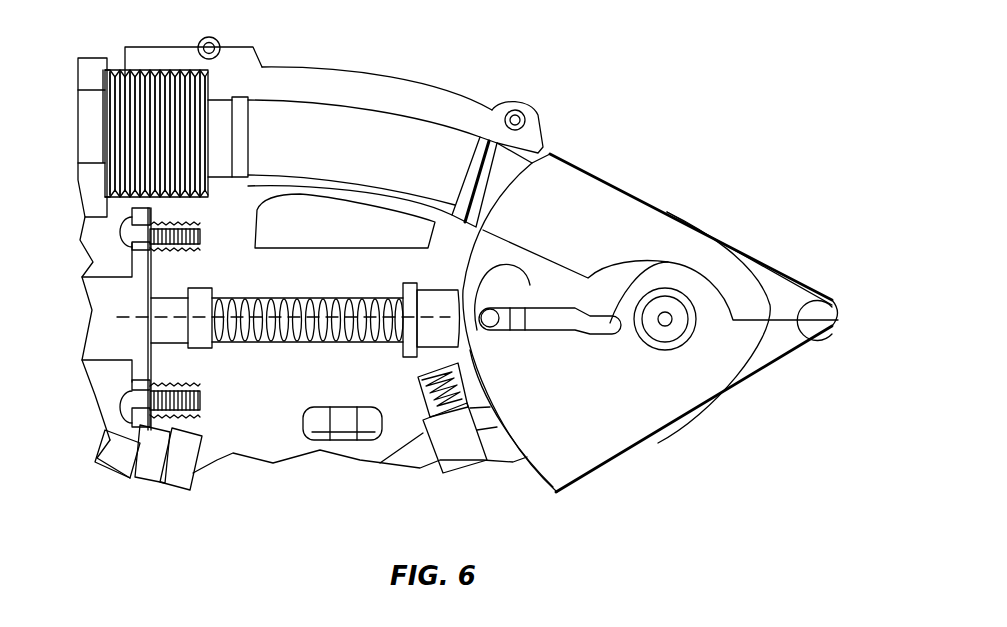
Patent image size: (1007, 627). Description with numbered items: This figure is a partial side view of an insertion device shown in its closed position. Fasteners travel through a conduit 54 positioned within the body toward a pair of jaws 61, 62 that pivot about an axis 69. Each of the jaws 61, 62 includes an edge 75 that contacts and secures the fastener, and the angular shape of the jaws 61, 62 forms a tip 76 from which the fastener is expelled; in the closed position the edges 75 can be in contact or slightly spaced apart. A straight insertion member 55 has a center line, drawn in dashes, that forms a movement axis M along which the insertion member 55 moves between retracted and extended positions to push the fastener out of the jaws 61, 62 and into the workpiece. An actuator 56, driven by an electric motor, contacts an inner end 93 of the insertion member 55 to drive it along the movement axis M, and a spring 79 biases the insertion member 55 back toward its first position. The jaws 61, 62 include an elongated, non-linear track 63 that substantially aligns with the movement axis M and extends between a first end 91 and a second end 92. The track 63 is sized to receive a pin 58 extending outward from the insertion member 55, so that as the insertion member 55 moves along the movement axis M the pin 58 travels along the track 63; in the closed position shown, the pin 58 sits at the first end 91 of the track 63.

The conduit 54 is at (340, 122).
The insertion member 55 is at (288, 327).
The actuator 56 is at (157, 337).
The pin 58 is at (492, 310).
The jaw 61 is at (545, 308).
The jaw 62 is at (770, 357).
The track 63 is at (575, 312).
The axis 69 is at (667, 318).
The edge 75 is at (810, 282).
The tip 76 is at (838, 313).
The spring 79 is at (243, 297).
The first end 91 is at (473, 327).
The second end 92 is at (610, 323).
The inner end 93 is at (225, 348).
The movement axis M is at (360, 340).